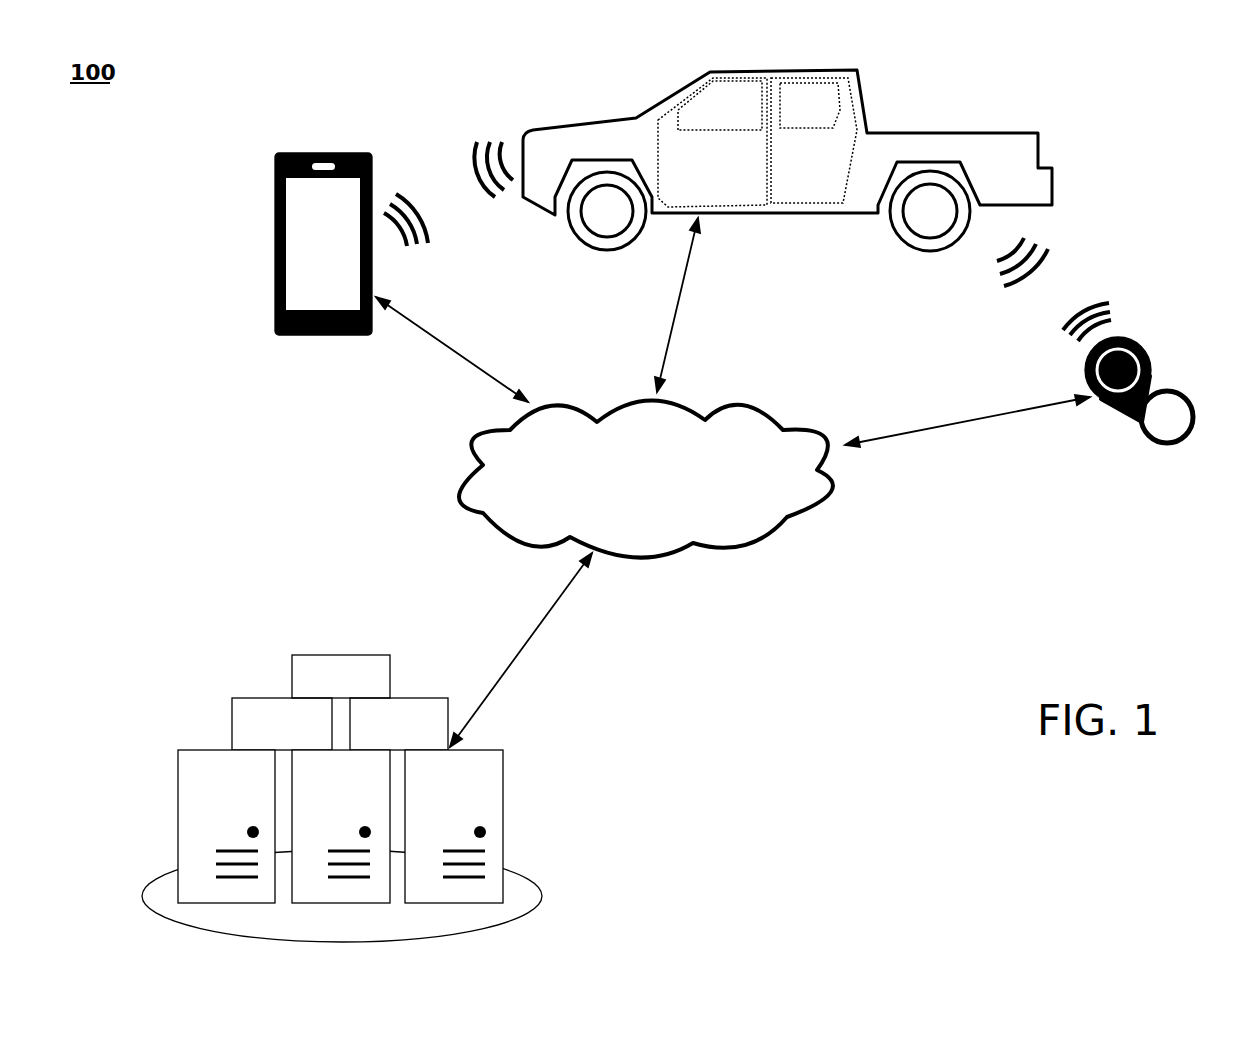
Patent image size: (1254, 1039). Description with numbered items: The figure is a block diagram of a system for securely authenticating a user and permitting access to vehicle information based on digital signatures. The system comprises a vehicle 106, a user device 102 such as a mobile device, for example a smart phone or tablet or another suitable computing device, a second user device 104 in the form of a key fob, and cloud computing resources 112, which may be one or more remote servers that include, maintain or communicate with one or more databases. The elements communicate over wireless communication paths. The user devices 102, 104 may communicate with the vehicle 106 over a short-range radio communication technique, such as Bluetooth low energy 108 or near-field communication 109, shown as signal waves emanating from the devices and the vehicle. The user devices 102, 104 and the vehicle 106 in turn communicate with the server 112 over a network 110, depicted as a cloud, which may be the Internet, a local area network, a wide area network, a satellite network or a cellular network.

The user device 102 is at (273, 238).
The user device 104 is at (1150, 380).
The vehicle 106 is at (848, 68).
The Bluetooth low energy 108 is at (408, 190).
The near-field communication 109 is at (1040, 243).
The network 110 is at (810, 505).
The cloud computing resources 112 is at (332, 662).